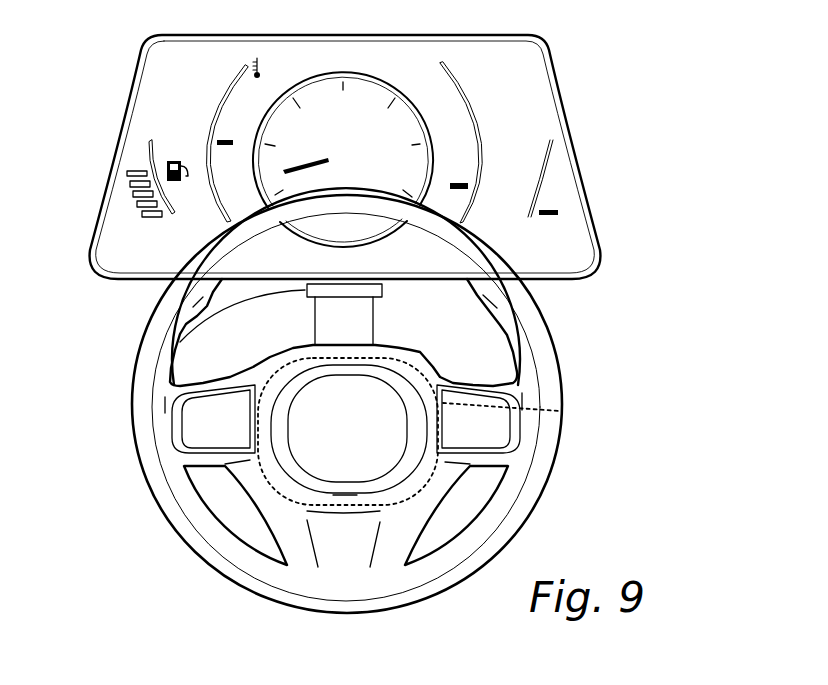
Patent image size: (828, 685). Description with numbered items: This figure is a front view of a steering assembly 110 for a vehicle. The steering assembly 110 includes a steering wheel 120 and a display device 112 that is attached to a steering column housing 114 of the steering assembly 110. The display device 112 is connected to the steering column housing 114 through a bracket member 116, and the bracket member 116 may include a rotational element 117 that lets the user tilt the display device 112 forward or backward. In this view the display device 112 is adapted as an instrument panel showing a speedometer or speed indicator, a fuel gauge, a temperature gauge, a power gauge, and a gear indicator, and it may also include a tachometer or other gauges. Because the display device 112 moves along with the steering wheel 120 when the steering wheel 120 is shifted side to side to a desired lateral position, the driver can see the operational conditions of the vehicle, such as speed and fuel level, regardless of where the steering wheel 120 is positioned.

The steering assembly 110 is at (373, 400).
The display device 112 is at (573, 115).
The steering column housing 114 is at (560, 410).
The bracket member 116 is at (250, 380).
The rotational element 117 is at (328, 328).
The steering wheel 120 is at (173, 517).